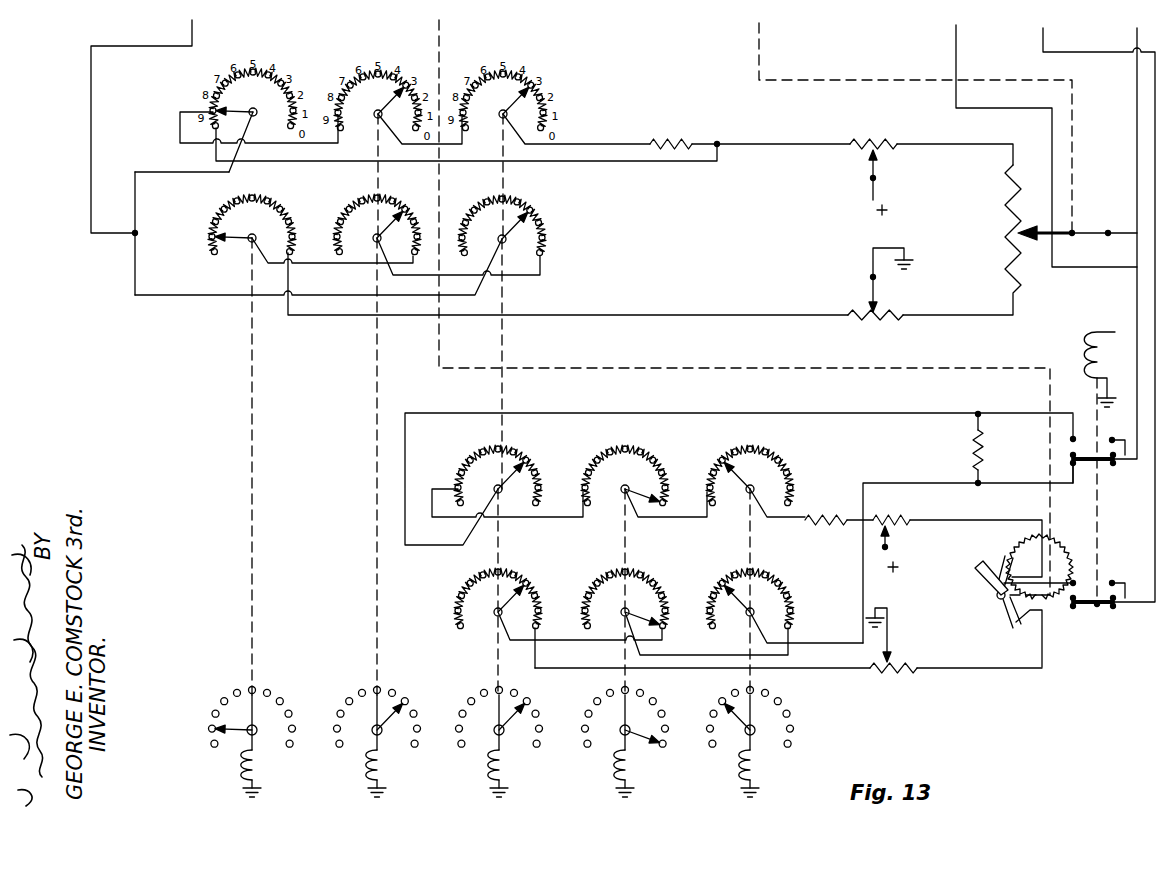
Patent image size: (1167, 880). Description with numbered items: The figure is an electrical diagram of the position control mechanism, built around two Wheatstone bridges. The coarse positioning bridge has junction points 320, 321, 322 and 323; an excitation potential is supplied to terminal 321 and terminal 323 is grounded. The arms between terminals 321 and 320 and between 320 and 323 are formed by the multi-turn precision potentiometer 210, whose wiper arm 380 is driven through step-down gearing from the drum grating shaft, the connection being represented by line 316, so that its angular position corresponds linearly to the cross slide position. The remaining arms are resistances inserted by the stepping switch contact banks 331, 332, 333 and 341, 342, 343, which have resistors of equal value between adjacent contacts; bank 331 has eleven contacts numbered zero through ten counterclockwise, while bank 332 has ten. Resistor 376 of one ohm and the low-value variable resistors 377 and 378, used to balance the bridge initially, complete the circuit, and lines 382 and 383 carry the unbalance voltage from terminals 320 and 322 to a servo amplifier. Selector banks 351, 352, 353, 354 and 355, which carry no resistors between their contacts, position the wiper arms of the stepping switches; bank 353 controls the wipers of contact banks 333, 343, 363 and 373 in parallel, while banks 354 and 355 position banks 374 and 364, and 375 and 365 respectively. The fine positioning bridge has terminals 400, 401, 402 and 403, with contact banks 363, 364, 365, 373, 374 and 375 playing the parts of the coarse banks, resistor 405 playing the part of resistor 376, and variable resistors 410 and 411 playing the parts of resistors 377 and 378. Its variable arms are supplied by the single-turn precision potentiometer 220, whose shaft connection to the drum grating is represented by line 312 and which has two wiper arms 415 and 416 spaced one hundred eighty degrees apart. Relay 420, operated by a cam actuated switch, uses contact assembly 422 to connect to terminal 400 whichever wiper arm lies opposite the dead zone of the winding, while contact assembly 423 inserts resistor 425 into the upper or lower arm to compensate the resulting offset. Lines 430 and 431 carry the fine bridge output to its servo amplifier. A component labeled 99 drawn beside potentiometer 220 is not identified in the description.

The motor 99 is at (976, 583).
The precision potentiometer 210 is at (1005, 262).
The precision potentiometer 220 is at (971, 590).
The line 312 is at (439, 25).
The line 316 is at (759, 52).
The junction point 320 is at (1008, 236).
The junction point 321 is at (871, 178).
The junction point 322 is at (134, 234).
The junction point 323 is at (871, 281).
The contact bank 331 is at (448, 101).
The contact bank 332 is at (393, 88).
The contact bank 333 is at (549, 88).
The contact bank 341 is at (528, 244).
The contact bank 342 is at (436, 224).
The contact bank 343 is at (502, 214).
The selector bank 351 is at (252, 734).
The selector bank 352 is at (377, 734).
The selector bank 353 is at (499, 734).
The selector bank 354 is at (625, 734).
The selector bank 355 is at (750, 734).
The contact bank 363 is at (507, 463).
The contact bank 364 is at (644, 463).
The contact bank 365 is at (755, 463).
The contact bank 373 is at (558, 600).
The contact bank 374 is at (684, 594).
The contact bank 375 is at (784, 588).
The resistor 376 is at (669, 140).
The variable resistor 377 is at (871, 140).
The variable resistor 378 is at (871, 320).
The wiper arm 380 is at (1078, 236).
The line 382 is at (1137, 98).
The line 383 is at (90, 72).
The terminal 400 is at (1135, 600).
The terminal 401 is at (887, 547).
The terminal 402 is at (1113, 462).
The terminal 403 is at (888, 645).
The resistor 405 is at (832, 516).
The variable resistor 410 is at (889, 518).
The variable resistor 411 is at (893, 672).
The wiper arm 415 is at (1010, 545).
The wiper arm 416 is at (1008, 630).
The relay 420 is at (1088, 349).
The contact assembly 422 is at (1097, 606).
The contact assembly 423 is at (1078, 456).
The resistor 425 is at (975, 448).
The line 430 is at (955, 49).
The line 431 is at (1042, 43).